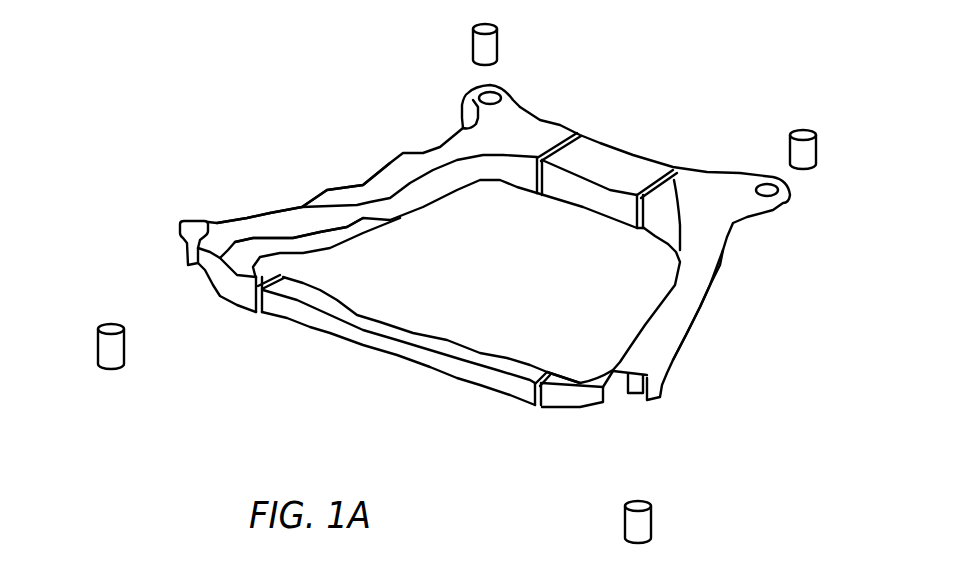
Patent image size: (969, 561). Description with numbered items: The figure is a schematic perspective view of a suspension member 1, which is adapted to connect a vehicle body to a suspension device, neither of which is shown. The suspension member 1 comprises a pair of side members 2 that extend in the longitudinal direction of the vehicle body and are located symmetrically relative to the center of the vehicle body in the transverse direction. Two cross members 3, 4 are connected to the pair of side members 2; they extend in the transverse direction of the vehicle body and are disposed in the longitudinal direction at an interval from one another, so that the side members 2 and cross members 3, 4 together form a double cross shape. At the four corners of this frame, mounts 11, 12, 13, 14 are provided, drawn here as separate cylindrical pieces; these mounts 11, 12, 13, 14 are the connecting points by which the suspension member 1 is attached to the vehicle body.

The suspension member 1 is at (588, 128).
The side members 2 is at (362, 186).
The cross member 3 is at (415, 355).
The cross member 4 is at (622, 158).
The mount 11 is at (105, 326).
The mount 12 is at (630, 522).
The mount 13 is at (475, 43).
The mount 14 is at (803, 130).